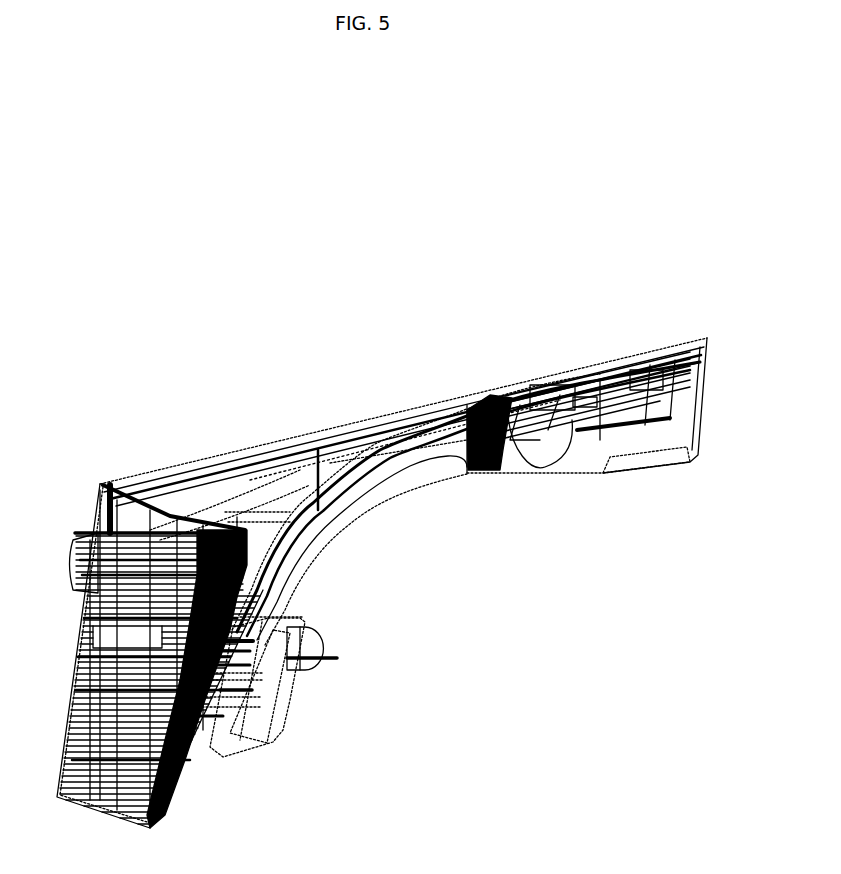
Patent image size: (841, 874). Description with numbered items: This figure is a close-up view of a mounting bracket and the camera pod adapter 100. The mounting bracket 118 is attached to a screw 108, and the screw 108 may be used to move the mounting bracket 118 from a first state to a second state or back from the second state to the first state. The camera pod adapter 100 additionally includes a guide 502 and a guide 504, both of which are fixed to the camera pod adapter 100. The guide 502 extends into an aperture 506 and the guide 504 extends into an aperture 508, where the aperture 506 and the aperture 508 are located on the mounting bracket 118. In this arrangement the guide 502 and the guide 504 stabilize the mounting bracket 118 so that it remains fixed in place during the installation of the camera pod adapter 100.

The camera pod adapter 100 is at (362, 420).
The screw 108 is at (252, 690).
The mounting bracket 118 is at (337, 658).
The guide 502 is at (205, 723).
The guide 504 is at (243, 637).
The aperture 506 is at (318, 643).
The aperture 508 is at (287, 727).